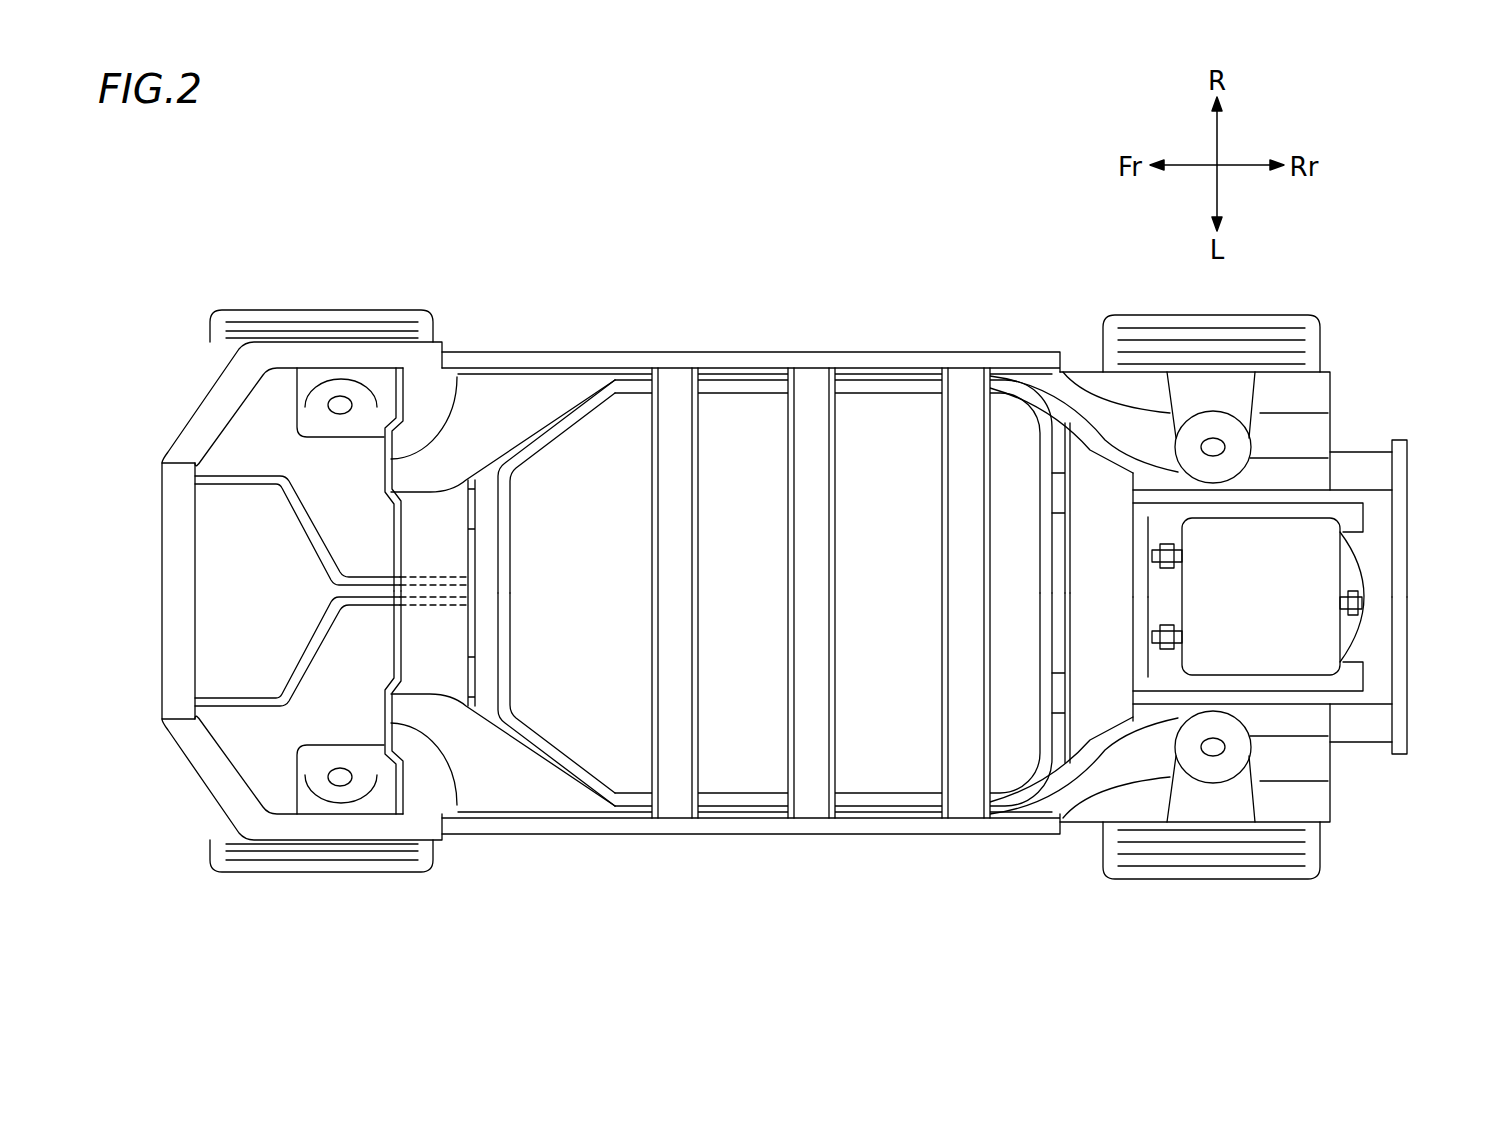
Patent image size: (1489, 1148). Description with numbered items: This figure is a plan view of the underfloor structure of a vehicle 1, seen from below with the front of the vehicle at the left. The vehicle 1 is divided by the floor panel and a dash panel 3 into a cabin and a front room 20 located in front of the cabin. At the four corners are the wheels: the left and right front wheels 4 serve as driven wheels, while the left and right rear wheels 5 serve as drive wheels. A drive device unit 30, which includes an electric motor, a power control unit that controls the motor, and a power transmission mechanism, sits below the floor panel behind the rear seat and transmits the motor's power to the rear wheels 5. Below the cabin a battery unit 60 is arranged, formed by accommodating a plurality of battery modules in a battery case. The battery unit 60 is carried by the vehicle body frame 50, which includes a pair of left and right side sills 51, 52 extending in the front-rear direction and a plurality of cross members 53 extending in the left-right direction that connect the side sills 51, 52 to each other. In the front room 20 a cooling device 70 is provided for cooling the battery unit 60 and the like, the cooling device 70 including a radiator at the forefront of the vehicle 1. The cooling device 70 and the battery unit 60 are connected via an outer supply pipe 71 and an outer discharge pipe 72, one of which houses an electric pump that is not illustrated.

The vehicle 1 is at (836, 257).
The dash panel 3 is at (432, 530).
The front wheels 4 is at (360, 310).
The rear wheels 5 is at (1256, 315).
The front room 20 is at (226, 615).
The drive device unit 30 is at (1283, 590).
The vehicle body frame 50 is at (920, 353).
The side sill 51 is at (850, 355).
The side sill 52 is at (880, 840).
The cross members 53 is at (443, 490).
The battery unit 60 is at (741, 472).
The cooling device 70 is at (160, 596).
The outer supply pipe 71 is at (233, 710).
The outer discharge pipe 72 is at (222, 470).